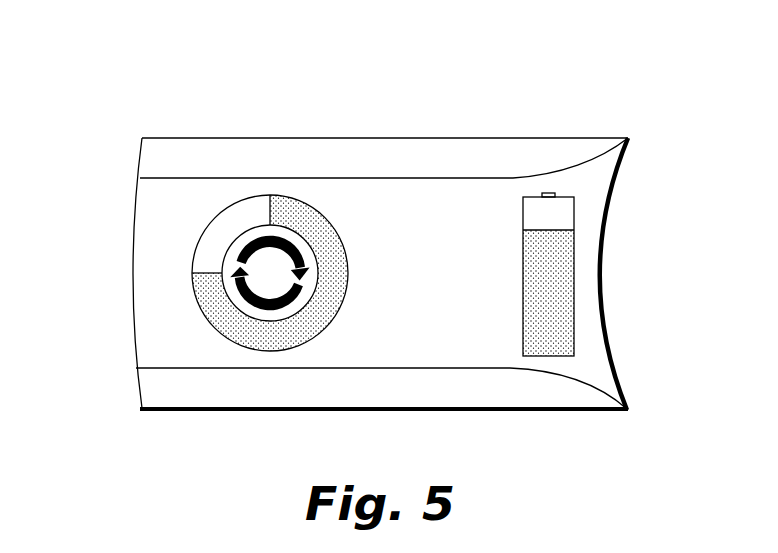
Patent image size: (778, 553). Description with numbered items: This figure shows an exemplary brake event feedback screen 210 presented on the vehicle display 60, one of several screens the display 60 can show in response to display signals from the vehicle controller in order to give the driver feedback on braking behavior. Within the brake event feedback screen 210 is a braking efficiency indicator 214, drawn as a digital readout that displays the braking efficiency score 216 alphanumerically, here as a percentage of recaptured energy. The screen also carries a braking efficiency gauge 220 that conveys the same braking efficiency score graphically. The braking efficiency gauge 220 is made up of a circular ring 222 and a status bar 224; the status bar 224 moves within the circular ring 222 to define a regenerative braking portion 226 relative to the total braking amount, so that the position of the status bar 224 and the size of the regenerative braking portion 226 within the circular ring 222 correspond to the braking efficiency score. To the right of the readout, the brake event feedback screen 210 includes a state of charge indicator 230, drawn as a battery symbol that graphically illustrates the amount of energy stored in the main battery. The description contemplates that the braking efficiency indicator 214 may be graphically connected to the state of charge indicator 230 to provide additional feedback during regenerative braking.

The display 60 is at (183, 63).
The brake event feedback screen 210 is at (130, 330).
The braking efficiency indicator 214 is at (473, 270).
The braking efficiency score 216 is at (415, 242).
The braking efficiency gauge 220 is at (270, 352).
The circular ring 222 is at (225, 315).
The status bar 224 is at (208, 272).
The regenerative braking portion 226 is at (203, 290).
The state of charge indicator 230 is at (574, 242).